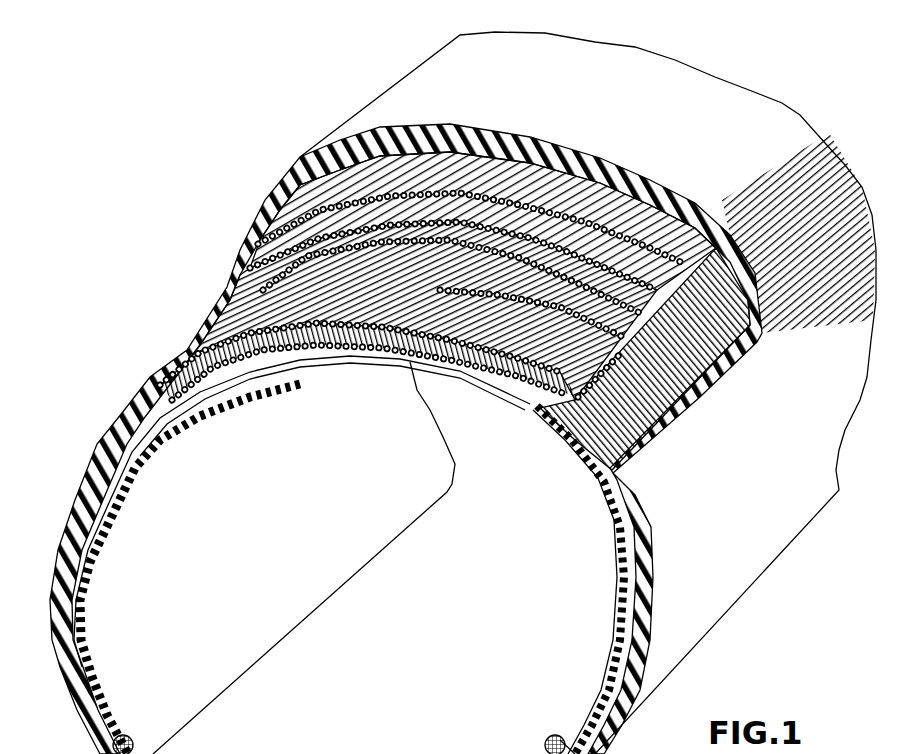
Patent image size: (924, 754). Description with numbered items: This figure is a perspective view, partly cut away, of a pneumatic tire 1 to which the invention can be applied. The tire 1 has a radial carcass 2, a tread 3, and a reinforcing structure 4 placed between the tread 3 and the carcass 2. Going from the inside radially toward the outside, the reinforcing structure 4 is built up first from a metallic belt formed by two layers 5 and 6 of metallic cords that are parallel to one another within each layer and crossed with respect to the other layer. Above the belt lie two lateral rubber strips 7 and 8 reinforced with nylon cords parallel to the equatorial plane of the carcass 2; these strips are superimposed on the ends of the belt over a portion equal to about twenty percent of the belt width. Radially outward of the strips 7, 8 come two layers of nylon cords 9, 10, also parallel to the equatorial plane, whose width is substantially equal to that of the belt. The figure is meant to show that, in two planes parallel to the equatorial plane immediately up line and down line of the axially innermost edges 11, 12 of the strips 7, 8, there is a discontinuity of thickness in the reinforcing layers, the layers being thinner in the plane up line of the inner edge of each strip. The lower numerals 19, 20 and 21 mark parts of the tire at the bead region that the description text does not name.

The pneumatic tire 1 is at (800, 96).
The radial carcass 2 is at (655, 385).
The tread 3 is at (614, 166).
The reinforcing structure 4 is at (226, 312).
The belt layer 5 is at (292, 380).
The belt layer 6 is at (357, 364).
The lateral rubber strip 7 is at (590, 293).
The lateral rubber strip 8 is at (250, 268).
The nylon cord layer 9 is at (462, 192).
The nylon cord layer 10 is at (529, 188).
The axially innermost edge 11 is at (331, 235).
The axially innermost edge 12 is at (562, 297).
The bead 19 is at (440, 743).
The bead core 20 is at (192, 744).
The bead filler 21 is at (505, 747).